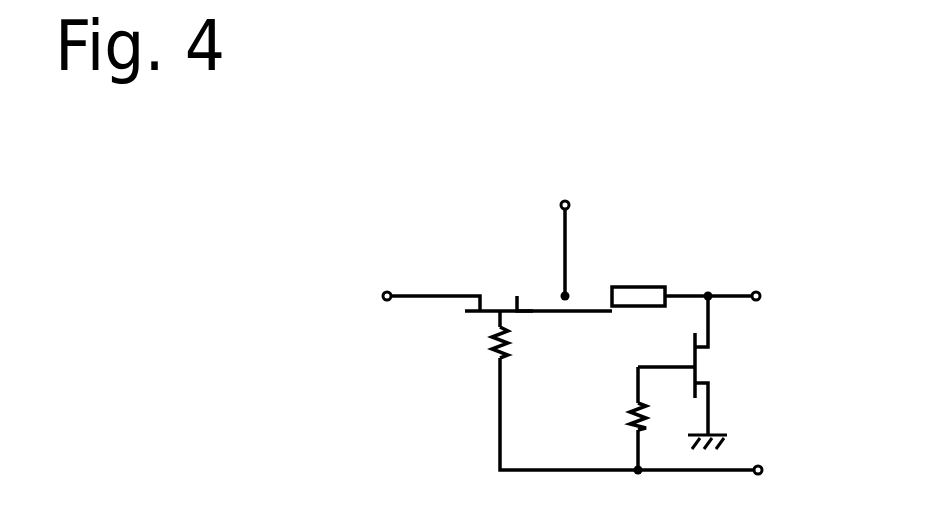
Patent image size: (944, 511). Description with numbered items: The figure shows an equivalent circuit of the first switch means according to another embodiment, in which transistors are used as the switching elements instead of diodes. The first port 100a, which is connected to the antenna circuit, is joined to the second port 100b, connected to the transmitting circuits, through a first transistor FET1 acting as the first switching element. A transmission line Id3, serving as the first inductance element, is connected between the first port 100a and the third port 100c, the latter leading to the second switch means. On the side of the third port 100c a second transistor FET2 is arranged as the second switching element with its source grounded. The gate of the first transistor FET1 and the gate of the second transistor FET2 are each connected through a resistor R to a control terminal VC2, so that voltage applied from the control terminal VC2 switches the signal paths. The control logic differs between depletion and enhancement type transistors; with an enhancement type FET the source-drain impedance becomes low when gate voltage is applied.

The first port 100a is at (562, 201).
The second port 100b is at (383, 295).
The third port 100c is at (760, 295).
The transistor FET1 is at (500, 293).
The transistor FET2 is at (710, 366).
The transmission line Id3 is at (640, 285).
The resistor R is at (477, 340).
The control terminal VC2 is at (727, 470).